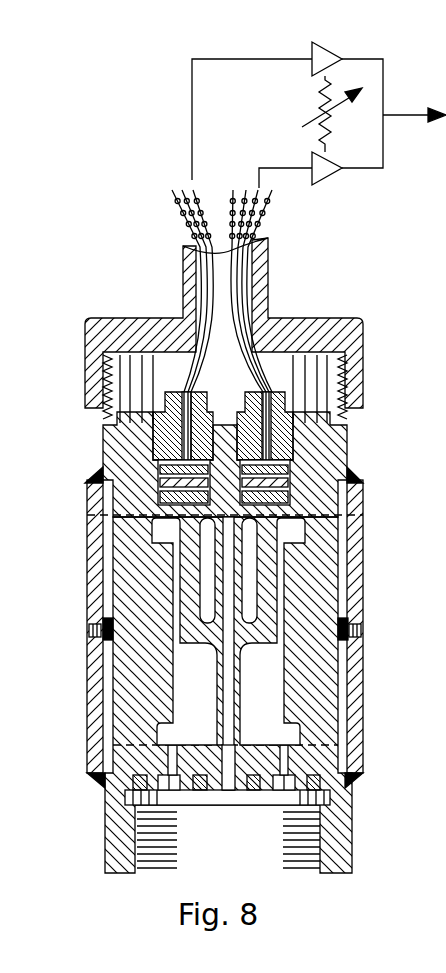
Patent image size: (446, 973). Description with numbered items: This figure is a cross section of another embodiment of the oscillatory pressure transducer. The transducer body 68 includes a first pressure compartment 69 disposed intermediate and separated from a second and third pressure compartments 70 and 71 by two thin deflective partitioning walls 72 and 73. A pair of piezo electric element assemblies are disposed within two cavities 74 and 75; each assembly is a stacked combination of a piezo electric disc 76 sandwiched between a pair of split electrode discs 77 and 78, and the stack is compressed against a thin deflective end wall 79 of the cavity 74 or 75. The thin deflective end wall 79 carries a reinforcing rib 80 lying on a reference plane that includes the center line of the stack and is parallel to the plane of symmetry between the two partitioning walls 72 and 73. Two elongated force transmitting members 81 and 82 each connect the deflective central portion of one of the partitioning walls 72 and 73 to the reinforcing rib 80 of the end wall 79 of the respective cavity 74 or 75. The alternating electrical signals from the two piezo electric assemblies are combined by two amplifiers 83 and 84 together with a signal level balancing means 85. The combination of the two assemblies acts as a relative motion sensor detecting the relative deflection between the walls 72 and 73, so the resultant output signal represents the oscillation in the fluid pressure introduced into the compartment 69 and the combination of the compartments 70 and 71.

The transducer body 68 is at (150, 715).
The first pressure compartment 69 is at (242, 666).
The second pressure compartment 70 is at (215, 600).
The third pressure compartment 71 is at (285, 615).
The thin deflective partitioning wall 72 is at (220, 683).
The thin deflective partitioning wall 73 is at (237, 690).
The cavity 74 is at (140, 440).
The cavity 75 is at (300, 467).
The piezo electric disc 76 is at (140, 490).
The split electrode disc 77 is at (150, 478).
The split electrode disc 78 is at (160, 513).
The thin deflective end wall 79 is at (165, 520).
The reinforcing rib 80 is at (272, 527).
The elongated force transmitting member 81 is at (185, 560).
The elongated force transmitting member 82 is at (262, 556).
The amplifier 83 is at (327, 43).
The amplifier 84 is at (323, 180).
The signal level balancing means 85 is at (340, 113).